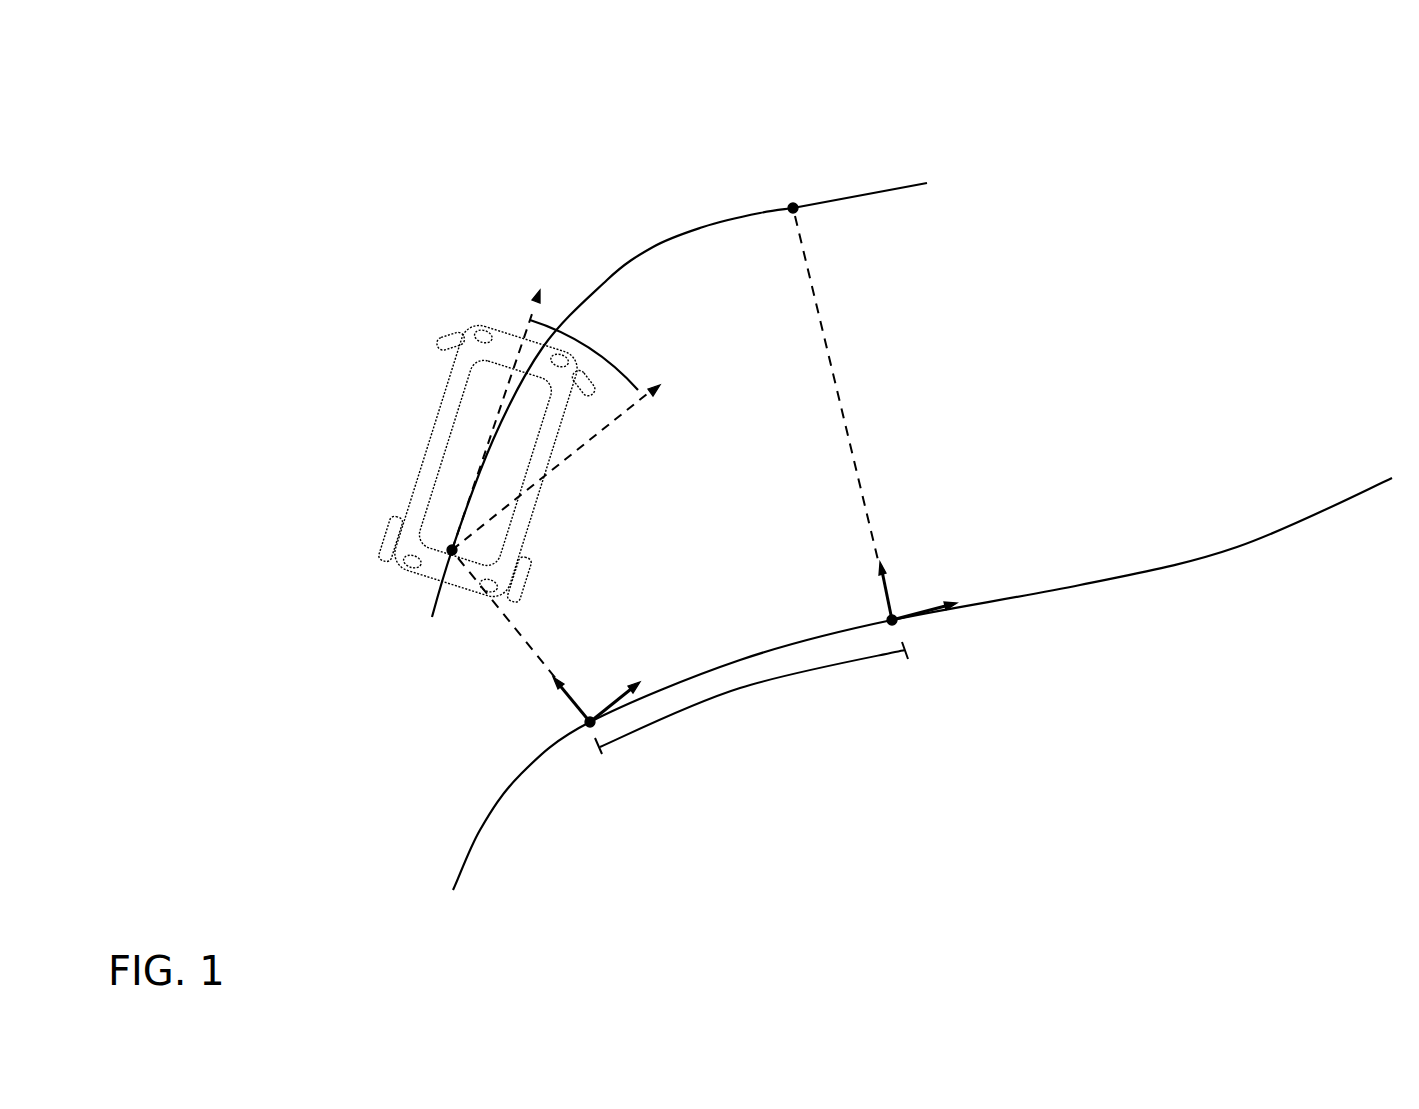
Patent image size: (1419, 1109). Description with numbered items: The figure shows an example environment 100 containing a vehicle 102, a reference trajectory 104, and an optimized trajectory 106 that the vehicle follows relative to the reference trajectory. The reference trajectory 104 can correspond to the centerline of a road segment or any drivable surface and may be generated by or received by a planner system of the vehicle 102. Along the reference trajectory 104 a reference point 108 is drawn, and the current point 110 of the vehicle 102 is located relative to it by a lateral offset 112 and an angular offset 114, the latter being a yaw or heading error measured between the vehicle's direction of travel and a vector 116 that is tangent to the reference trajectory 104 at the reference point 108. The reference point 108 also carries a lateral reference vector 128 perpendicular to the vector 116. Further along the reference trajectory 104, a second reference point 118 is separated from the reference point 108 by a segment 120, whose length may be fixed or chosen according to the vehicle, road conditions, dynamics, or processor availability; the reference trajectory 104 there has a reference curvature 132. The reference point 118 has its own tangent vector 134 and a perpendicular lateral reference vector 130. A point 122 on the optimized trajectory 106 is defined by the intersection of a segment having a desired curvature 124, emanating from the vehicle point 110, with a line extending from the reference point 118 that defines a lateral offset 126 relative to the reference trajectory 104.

The environment 100 is at (210, 104).
The vehicle 102 is at (410, 482).
The reference trajectory 104 is at (1235, 548).
The optimized trajectory 106 is at (912, 185).
The reference point 108 is at (590, 728).
The point 110 is at (450, 553).
The lateral offset 112 is at (526, 648).
The angular offset 114 is at (623, 362).
The vector 116 is at (615, 698).
The reference point 118 is at (897, 624).
The segment 120 is at (722, 699).
The point 122 is at (794, 204).
The desired curvature 124 is at (645, 244).
The lateral offset 126 is at (843, 388).
The lateral reference vector 128 is at (565, 700).
The lateral reference vector 130 is at (895, 572).
The reference curvature 132 is at (821, 622).
The vector 134 is at (935, 607).